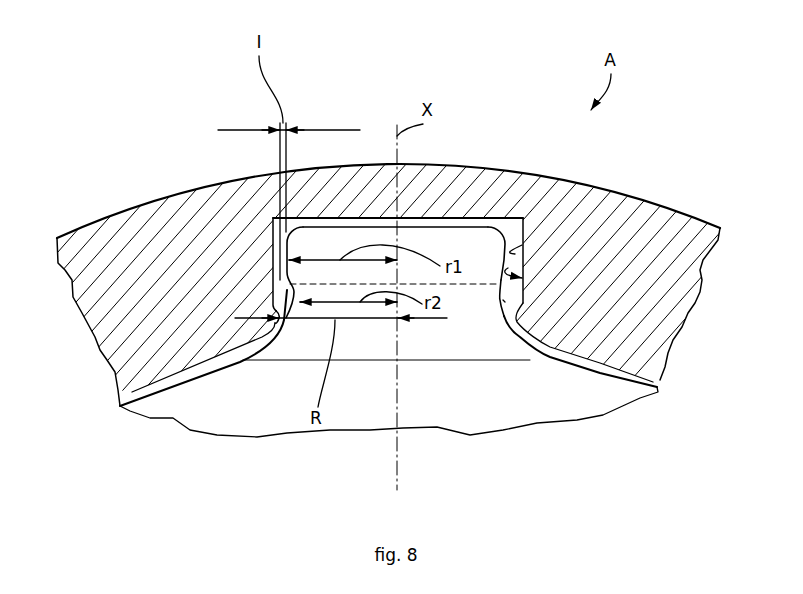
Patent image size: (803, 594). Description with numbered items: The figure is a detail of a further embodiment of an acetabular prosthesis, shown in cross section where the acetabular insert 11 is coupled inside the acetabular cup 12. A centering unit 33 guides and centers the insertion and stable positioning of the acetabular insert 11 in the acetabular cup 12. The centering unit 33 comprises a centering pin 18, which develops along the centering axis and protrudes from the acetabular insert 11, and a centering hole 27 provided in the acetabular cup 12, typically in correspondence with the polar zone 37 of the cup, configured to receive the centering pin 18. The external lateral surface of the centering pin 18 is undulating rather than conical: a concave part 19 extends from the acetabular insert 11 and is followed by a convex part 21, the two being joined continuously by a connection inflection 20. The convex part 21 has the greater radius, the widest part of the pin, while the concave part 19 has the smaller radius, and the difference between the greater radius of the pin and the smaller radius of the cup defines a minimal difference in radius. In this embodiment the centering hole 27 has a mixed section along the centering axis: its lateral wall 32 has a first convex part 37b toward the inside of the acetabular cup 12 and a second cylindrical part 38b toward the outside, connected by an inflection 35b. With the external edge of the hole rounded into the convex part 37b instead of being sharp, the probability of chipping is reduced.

The acetabular insert 11 is at (590, 424).
The acetabular cup 12 is at (650, 198).
The centering pin 18 is at (489, 221).
The concave part 19 is at (483, 292).
The connection inflection 20 is at (287, 285).
The convex part 21 is at (383, 236).
The centering hole 27 is at (287, 294).
The lateral wall 32 is at (508, 268).
The centering unit 33 is at (297, 221).
The inflection 35b is at (505, 302).
The polar zone 37 is at (451, 166).
The convex part 37b is at (536, 340).
The cylindrical part 38b is at (522, 245).